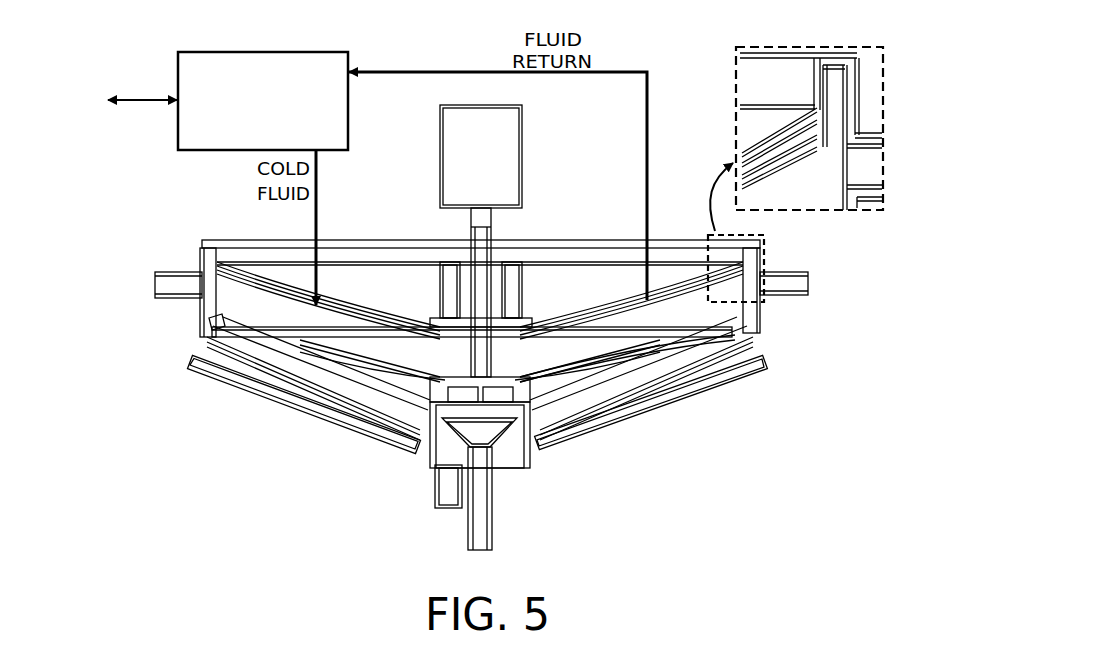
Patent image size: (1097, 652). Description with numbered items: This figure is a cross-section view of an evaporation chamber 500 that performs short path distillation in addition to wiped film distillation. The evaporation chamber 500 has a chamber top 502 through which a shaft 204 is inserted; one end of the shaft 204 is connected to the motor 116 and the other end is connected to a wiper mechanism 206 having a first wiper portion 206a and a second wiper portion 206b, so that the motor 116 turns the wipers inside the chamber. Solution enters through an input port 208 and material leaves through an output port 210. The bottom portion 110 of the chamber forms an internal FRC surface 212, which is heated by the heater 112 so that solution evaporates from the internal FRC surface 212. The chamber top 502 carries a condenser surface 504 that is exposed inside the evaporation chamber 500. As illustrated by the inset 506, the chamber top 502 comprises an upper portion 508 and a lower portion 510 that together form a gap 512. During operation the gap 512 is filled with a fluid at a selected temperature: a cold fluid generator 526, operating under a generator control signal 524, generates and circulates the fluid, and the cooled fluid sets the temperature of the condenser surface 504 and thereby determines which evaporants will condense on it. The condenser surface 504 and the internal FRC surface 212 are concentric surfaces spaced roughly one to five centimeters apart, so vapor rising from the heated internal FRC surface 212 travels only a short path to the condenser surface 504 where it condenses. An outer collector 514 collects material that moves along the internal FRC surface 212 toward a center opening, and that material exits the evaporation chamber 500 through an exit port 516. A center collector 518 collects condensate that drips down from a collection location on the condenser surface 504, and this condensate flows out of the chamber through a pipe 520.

The evaporation chamber 500 is at (152, 248).
The chamber top 502 is at (238, 240).
The condenser surface 504 is at (692, 308).
The inset 506 is at (736, 78).
The upper portion 508 is at (782, 128).
The lower portion 510 is at (815, 150).
The gap 512 is at (766, 155).
The outer collector 514 is at (513, 467).
The exit port 516 is at (434, 492).
The center collector 518 is at (486, 430).
The pipe 520 is at (493, 541).
The generator control signal 524 is at (138, 99).
The cold fluid generator 526 is at (220, 50).
The motor 116 is at (440, 140).
The shaft 204 is at (477, 237).
The wiper mechanism 206 is at (690, 347).
The first wiper portion 206a is at (378, 378).
The second wiper portion 206b is at (580, 382).
The input port 208 is at (153, 283).
The output port 210 is at (809, 284).
The internal FRC surface 212 is at (322, 374).
The bottom portion 110 is at (214, 352).
The heater 112 is at (682, 402).